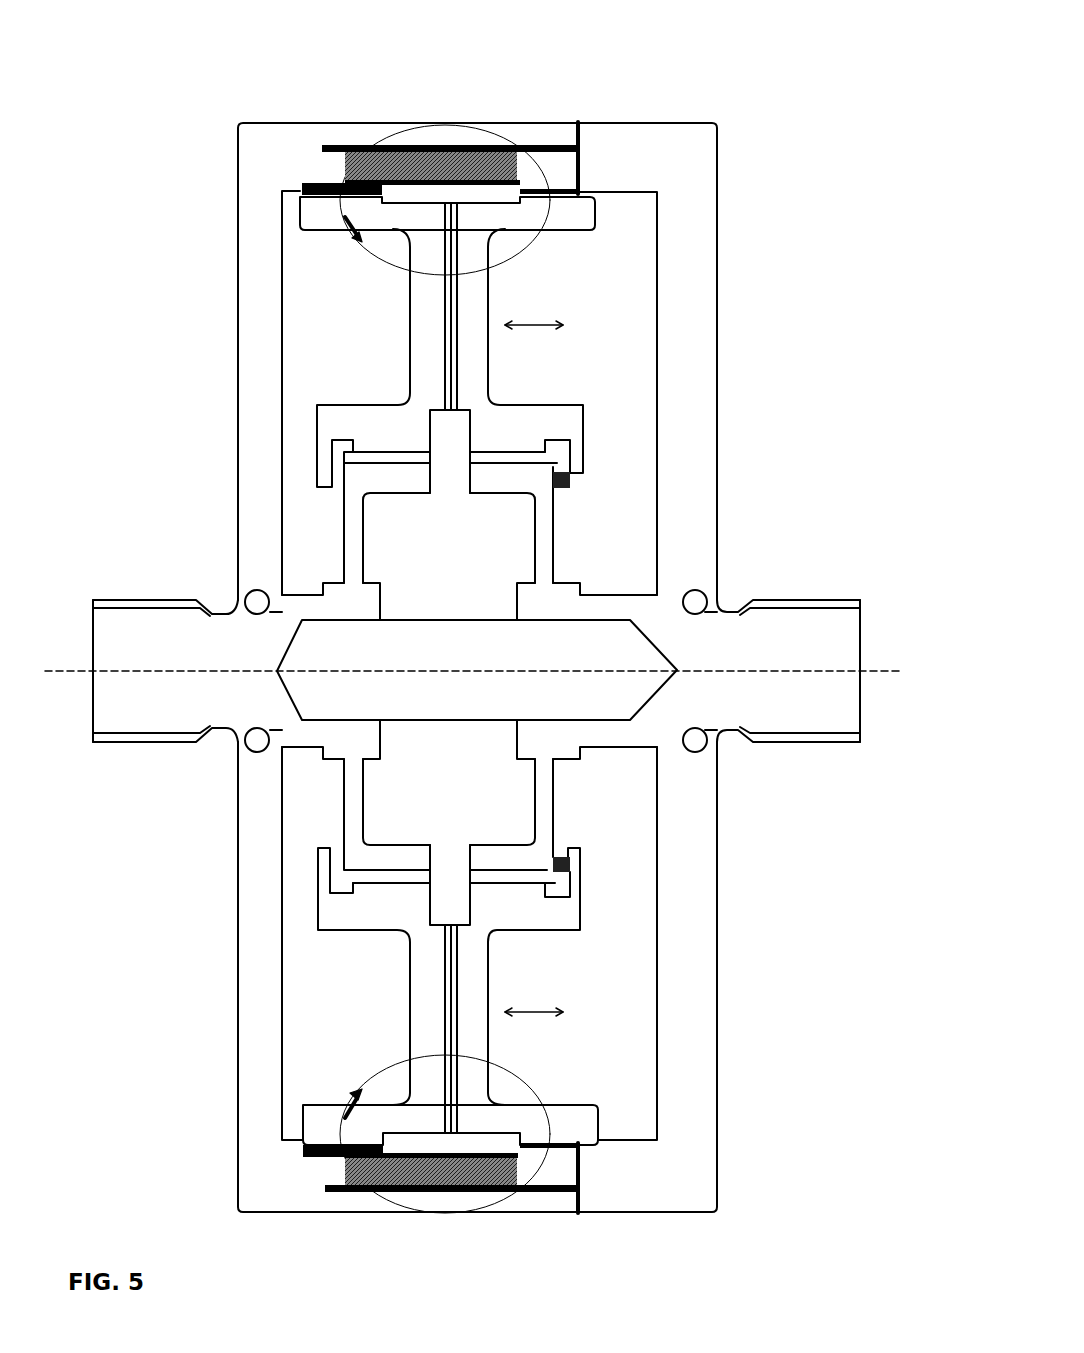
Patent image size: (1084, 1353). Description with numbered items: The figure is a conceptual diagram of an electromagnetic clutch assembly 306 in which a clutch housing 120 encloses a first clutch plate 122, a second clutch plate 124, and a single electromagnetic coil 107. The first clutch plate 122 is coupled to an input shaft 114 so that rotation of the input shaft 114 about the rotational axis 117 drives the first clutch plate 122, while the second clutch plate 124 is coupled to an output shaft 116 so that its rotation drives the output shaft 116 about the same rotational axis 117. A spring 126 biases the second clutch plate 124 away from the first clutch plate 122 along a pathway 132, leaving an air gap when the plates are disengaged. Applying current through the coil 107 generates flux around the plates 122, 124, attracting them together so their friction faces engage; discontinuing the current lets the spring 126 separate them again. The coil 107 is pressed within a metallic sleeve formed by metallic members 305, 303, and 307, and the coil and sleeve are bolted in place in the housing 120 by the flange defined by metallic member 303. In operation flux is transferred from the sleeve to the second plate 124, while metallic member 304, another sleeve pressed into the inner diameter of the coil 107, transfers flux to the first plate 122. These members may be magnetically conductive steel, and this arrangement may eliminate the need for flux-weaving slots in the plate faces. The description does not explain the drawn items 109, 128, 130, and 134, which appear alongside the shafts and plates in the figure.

The electromagnetic coil 107 is at (488, 145).
The permanent magnet 109 is at (330, 1130).
The input shaft 114 is at (165, 600).
The output shaft 116 is at (823, 598).
The rotational axis 117 is at (502, 674).
The clutch housing 120 is at (643, 150).
The first clutch plate 122 is at (423, 375).
The second clutch plate 124 is at (477, 365).
The spring 126 is at (570, 478).
The O-ring 128 is at (713, 747).
The O-ring 130 is at (253, 747).
The pathway 132 is at (555, 666).
The armature plate 134 is at (560, 210).
The metallic member 303 is at (580, 140).
The metallic member 304 is at (322, 177).
The metallic member 305 is at (360, 143).
The electromagnetic clutch assembly 306 is at (843, 83).
The metallic member 307 is at (583, 190).